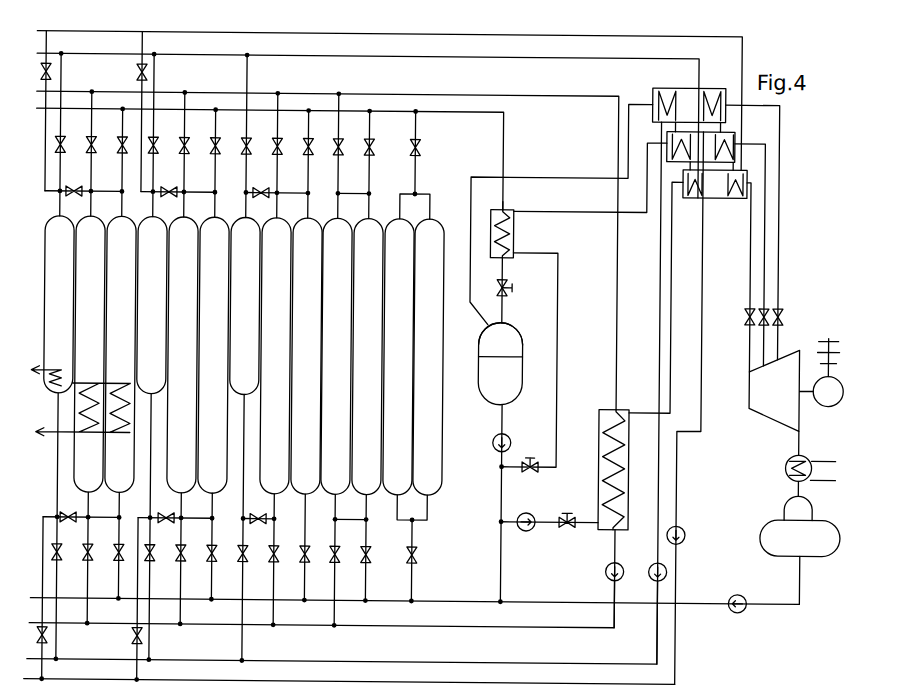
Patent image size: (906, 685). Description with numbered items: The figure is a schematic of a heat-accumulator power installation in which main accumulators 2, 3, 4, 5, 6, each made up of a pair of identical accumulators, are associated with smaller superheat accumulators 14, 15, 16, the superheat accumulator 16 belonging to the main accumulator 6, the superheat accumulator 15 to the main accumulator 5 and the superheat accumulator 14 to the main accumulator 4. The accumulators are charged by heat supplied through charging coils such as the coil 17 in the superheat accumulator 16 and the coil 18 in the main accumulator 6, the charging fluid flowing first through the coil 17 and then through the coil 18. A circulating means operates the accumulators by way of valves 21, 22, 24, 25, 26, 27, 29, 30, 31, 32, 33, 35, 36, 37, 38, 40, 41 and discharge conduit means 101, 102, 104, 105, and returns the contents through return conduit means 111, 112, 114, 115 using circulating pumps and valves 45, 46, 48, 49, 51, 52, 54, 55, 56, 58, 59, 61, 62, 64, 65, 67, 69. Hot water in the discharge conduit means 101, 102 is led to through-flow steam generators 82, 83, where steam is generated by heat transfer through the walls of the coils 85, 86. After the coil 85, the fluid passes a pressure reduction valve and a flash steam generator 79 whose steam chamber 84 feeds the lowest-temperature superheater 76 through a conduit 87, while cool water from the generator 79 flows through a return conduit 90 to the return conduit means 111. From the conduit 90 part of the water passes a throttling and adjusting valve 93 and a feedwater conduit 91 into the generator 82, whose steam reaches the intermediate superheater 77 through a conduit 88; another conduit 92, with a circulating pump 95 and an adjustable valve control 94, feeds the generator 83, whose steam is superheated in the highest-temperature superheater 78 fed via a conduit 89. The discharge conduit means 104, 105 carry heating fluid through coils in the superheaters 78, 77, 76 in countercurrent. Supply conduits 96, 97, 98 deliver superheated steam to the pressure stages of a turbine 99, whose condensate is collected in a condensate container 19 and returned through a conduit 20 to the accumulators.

The main accumulator 2 is at (404, 255).
The main accumulator 3 is at (342, 255).
The main accumulator 4 is at (281, 255).
The main accumulator 5 is at (189, 255).
The main accumulator 6 is at (96, 255).
The superheat accumulator 14 is at (250, 255).
The superheat accumulator 15 is at (157, 255).
The superheat accumulator 16 is at (64, 255).
The charging coil 17 is at (49, 371).
The charging coil 18 is at (89, 383).
The condensate container 19 is at (769, 539).
The conduit 20 is at (784, 601).
The valve 21 is at (415, 143).
The valve 22 is at (338, 143).
The valve 24 is at (246, 143).
The valve 25 is at (138, 75).
The valve 26 is at (369, 143).
The valve 27 is at (277, 143).
The valve 29 is at (268, 183).
The valve 30 is at (153, 143).
The valve 31 is at (49, 75).
The valve 32 is at (308, 143).
The valve 33 is at (184, 143).
The valve 35 is at (175, 183).
The valve 36 is at (60, 143).
The valve 37 is at (215, 143).
The valve 38 is at (91, 143).
The valve 40 is at (81, 184).
The valve 41 is at (121, 155).
The circulating pump or valve 45 is at (413, 553).
The circulating pump or valve 46 is at (338, 553).
The circulating pump or valve 48 is at (246, 561).
The circulating pump or valve 49 is at (141, 634).
The circulating pump or valve 51 is at (368, 553).
The circulating pump or valve 52 is at (280, 553).
The circulating pump or valve 54 is at (259, 523).
The circulating pump or valve 55 is at (155, 559).
The circulating pump or valve 56 is at (50, 639).
The circulating pump or valve 58 is at (308, 553).
The circulating pump or valve 59 is at (186, 553).
The circulating pump or valve 61 is at (169, 523).
The circulating pump or valve 62 is at (64, 562).
The circulating pump or valve 64 is at (216, 553).
The circulating pump or valve 65 is at (94, 562).
The circulating pump or valve 67 is at (74, 523).
The circulating pump or valve 69 is at (120, 549).
The superheater 76 is at (671, 77).
The superheater 77 is at (736, 139).
The superheater 78 is at (732, 189).
The flash steam generator 79 is at (513, 371).
The steam generator 82 is at (514, 250).
The steam generator 83 is at (603, 470).
The steam chamber 84 is at (514, 343).
The coil 85 is at (505, 211).
The coil 86 is at (601, 438).
The conduit 87 is at (538, 172).
The conduit 88 is at (576, 205).
The conduit 89 is at (678, 415).
The return conduit 90 is at (503, 418).
The conduit 91 is at (558, 418).
The conduit 92 is at (586, 518).
The throttling and adjusting valve 93 is at (534, 461).
The adjustable valve control 94 is at (580, 500).
The circulating pump 95 is at (524, 513).
The supply conduit 96 is at (778, 256).
The supply conduit 97 is at (764, 243).
The supply conduit 98 is at (750, 234).
The turbine 99 is at (761, 383).
The discharge conduit means 101 is at (286, 108).
The discharge conduit means 102 is at (358, 88).
The discharge conduit means 104 is at (458, 56).
The discharge conduit means 105 is at (545, 36).
The return conduit means 111 is at (457, 598).
The return conduit means 112 is at (516, 625).
The return conduit means 114 is at (660, 644).
The return conduit means 115 is at (681, 644).